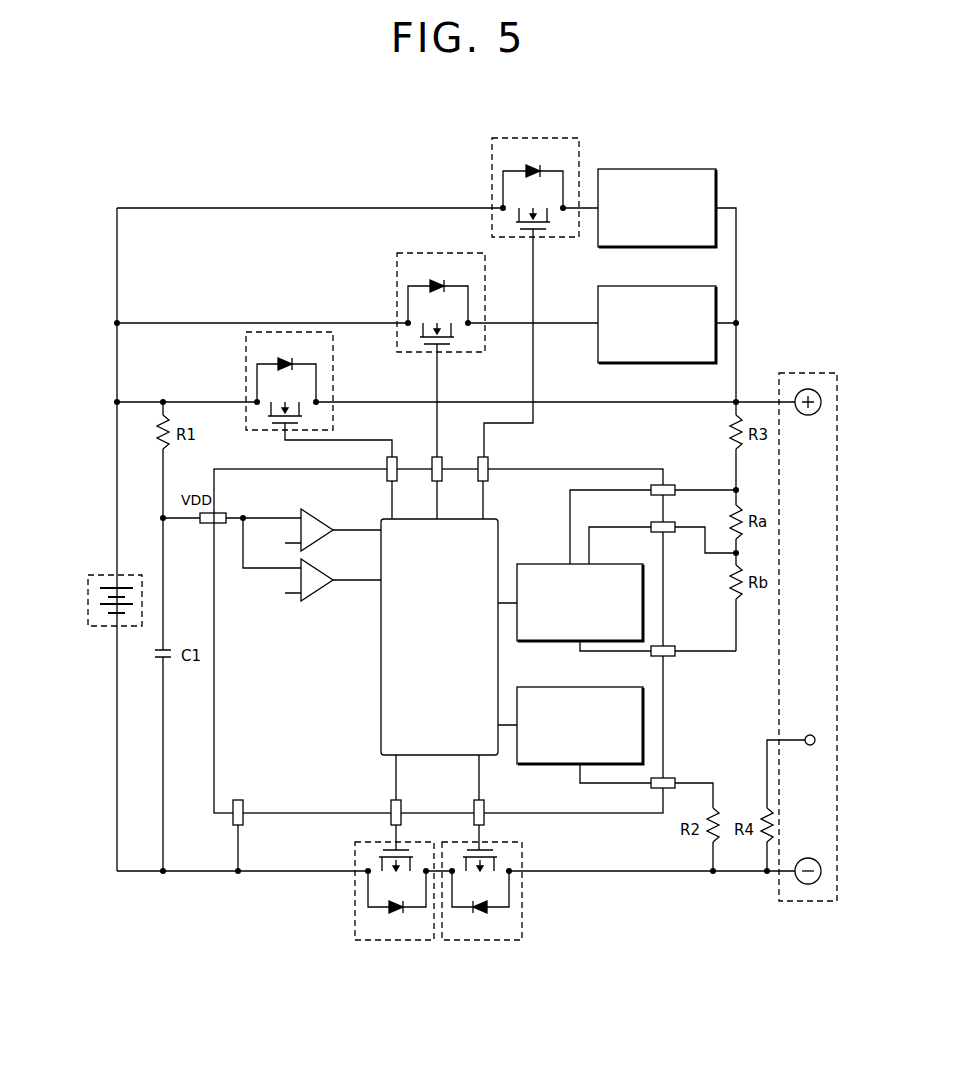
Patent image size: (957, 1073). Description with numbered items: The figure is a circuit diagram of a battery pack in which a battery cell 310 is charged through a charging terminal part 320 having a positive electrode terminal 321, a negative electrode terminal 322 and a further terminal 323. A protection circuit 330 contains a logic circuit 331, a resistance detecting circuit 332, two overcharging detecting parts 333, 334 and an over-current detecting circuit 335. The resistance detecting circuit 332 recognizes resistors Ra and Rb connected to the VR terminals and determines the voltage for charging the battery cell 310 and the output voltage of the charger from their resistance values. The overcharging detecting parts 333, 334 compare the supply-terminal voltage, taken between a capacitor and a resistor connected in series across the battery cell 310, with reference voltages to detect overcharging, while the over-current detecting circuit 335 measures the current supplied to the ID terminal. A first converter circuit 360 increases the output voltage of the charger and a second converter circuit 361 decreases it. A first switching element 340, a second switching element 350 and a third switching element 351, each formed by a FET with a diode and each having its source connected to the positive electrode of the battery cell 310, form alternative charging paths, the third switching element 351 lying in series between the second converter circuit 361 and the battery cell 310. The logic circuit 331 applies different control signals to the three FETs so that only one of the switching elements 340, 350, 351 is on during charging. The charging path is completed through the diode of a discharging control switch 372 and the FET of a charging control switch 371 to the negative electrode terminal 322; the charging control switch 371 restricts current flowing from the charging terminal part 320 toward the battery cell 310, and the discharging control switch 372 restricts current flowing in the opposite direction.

The battery cell 310 is at (105, 575).
The charging terminal part 320 is at (808, 372).
The positive electrode terminal 321 is at (808, 415).
The negative electrode terminal 322 is at (808, 884).
The identification terminal 323 is at (810, 735).
The protection circuit 330 is at (555, 469).
The logic circuit 331 is at (439, 637).
The resistance detecting circuit 332 is at (603, 564).
The overcharging detecting part 333 is at (319, 516).
The overcharging detecting part 334 is at (319, 594).
The over-current detecting circuit 335 is at (603, 687).
The first switching element 340 is at (246, 373).
The second switching element 350 is at (397, 295).
The third switching element 351 is at (492, 180).
The first converter circuit 360 is at (660, 286).
The second converter circuit 361 is at (660, 169).
The charging control switch 371 is at (522, 921).
The discharging control switch 372 is at (355, 921).